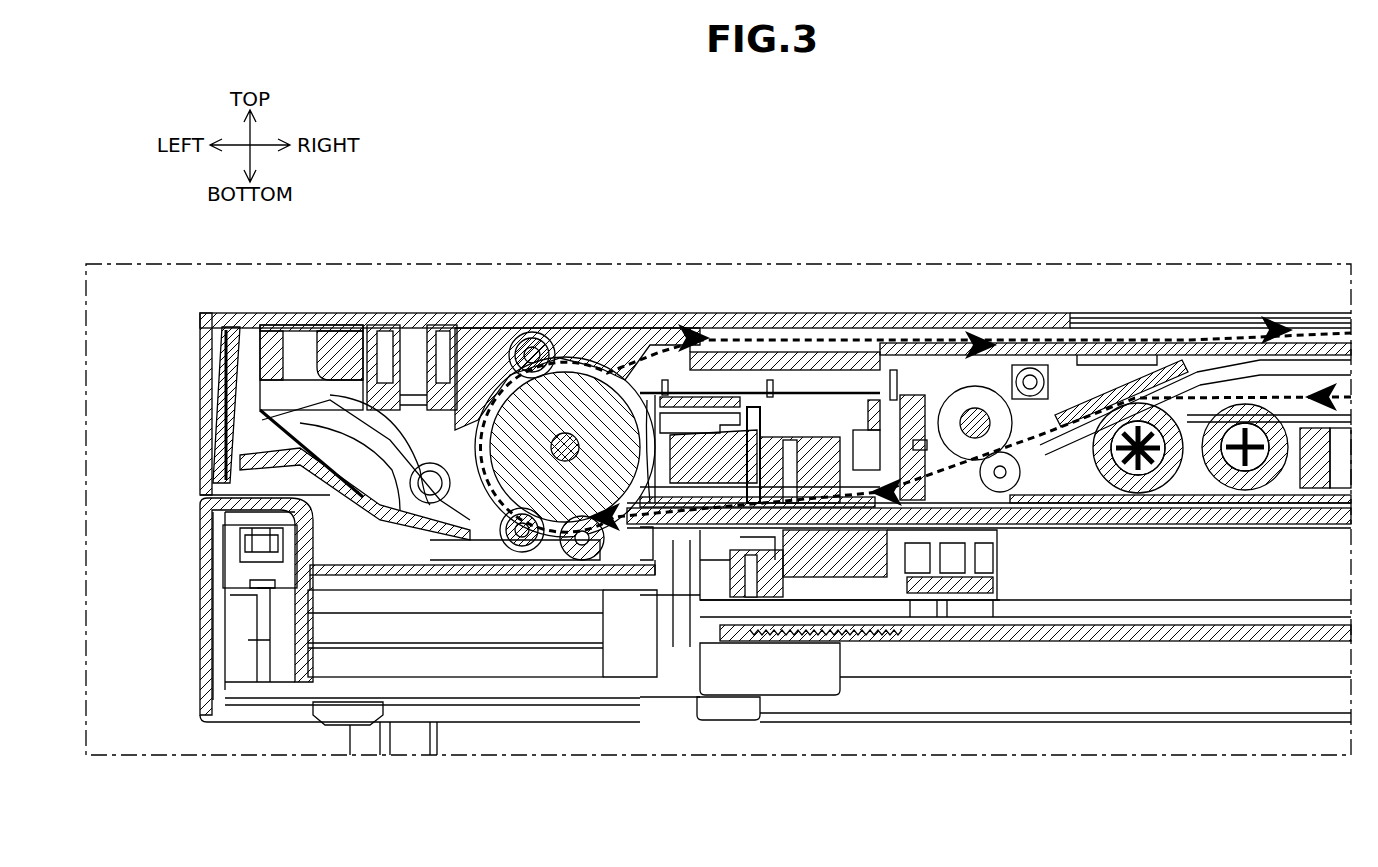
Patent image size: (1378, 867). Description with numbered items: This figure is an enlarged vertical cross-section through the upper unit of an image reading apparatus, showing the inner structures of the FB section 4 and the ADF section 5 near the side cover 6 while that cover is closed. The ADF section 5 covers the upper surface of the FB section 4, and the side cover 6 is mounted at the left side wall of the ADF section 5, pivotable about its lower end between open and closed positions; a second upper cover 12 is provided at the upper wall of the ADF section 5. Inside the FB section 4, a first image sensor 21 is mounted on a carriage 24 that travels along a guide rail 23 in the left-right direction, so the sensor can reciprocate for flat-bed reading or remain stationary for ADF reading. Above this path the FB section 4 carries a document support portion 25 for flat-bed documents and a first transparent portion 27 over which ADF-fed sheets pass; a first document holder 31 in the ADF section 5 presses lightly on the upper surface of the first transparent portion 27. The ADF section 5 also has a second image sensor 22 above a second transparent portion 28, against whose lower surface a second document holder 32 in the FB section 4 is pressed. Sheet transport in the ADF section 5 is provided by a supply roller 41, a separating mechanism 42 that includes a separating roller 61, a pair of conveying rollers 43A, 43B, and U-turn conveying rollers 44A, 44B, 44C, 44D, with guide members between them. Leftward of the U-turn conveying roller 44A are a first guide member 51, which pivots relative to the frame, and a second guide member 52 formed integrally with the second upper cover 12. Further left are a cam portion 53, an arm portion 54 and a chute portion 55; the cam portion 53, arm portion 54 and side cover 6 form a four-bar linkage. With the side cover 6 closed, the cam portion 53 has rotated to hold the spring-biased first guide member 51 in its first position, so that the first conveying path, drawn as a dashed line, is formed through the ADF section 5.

The FB section 4 is at (1293, 713).
The ADF section 5 is at (1300, 313).
The side cover 6 is at (200, 400).
The second upper cover 12 is at (665, 330).
The first image sensor 21 is at (870, 573).
The second image sensor 22 is at (750, 430).
The guide rail 23 is at (1290, 607).
The carriage 24 is at (1010, 530).
The document support portion 25 is at (1080, 527).
The first transparent portion 27 is at (773, 537).
The second transparent portion 28 is at (647, 395).
The first document holder 31 is at (870, 410).
The second document holder 32 is at (690, 540).
The supply roller 41 is at (1243, 495).
The separating mechanism 42 is at (1132, 360).
The conveying roller 43A is at (1013, 503).
The conveying roller 43B is at (963, 400).
The U-turn conveying roller 44A is at (566, 372).
The U-turn conveying roller 44B is at (583, 560).
The U-turn conveying roller 44C is at (518, 552).
The U-turn conveying roller 44D is at (530, 332).
The first guide member 51 is at (482, 545).
The second guide member 52 is at (462, 440).
The cam portion 53 is at (418, 433).
The arm portion 54 is at (381, 410).
The chute portion 55 is at (380, 515).
The separating roller 61 is at (1137, 495).